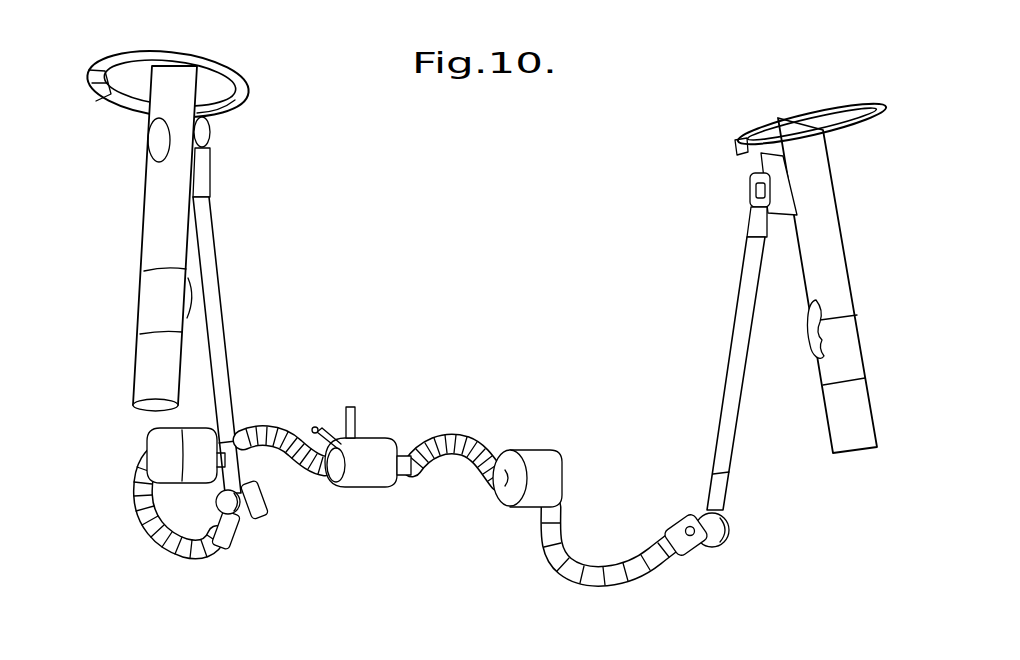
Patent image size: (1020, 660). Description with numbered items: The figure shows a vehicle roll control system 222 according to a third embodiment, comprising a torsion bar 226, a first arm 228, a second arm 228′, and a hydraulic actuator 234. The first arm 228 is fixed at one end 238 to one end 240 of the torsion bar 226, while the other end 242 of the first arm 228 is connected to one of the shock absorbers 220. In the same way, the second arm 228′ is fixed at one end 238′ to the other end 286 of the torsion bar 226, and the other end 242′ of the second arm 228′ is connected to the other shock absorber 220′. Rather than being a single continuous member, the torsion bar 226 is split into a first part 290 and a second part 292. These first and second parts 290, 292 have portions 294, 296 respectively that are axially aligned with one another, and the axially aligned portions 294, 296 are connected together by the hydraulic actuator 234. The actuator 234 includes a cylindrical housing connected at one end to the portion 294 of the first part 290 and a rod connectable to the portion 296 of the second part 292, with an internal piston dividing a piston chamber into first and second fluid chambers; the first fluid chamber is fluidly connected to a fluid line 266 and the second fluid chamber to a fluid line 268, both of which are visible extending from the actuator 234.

The shock absorber 220 is at (158, 234).
The shock absorber 220′ is at (926, 232).
The vehicle roll control system 222 is at (460, 378).
The torsion bar 226 is at (442, 470).
The first arm 228 is at (223, 329).
The second arm 228′ is at (802, 409).
The hydraulic actuator 234 is at (380, 429).
The one end of the first arm 238 is at (221, 505).
The one end of the second arm 238′ is at (794, 533).
The one end of the torsion bar 240 is at (257, 513).
The other end of the first arm 242 is at (208, 138).
The other end of the second arm 242′ is at (751, 193).
The fluid line 266 is at (314, 426).
The fluid line 268 is at (351, 404).
The other end of the torsion bar 286 is at (700, 554).
The first part of the torsion bar 290 is at (277, 425).
The second part of the torsion bar 292 is at (541, 543).
The portion of the first part 294 is at (338, 466).
The portion of the second part 296 is at (407, 452).